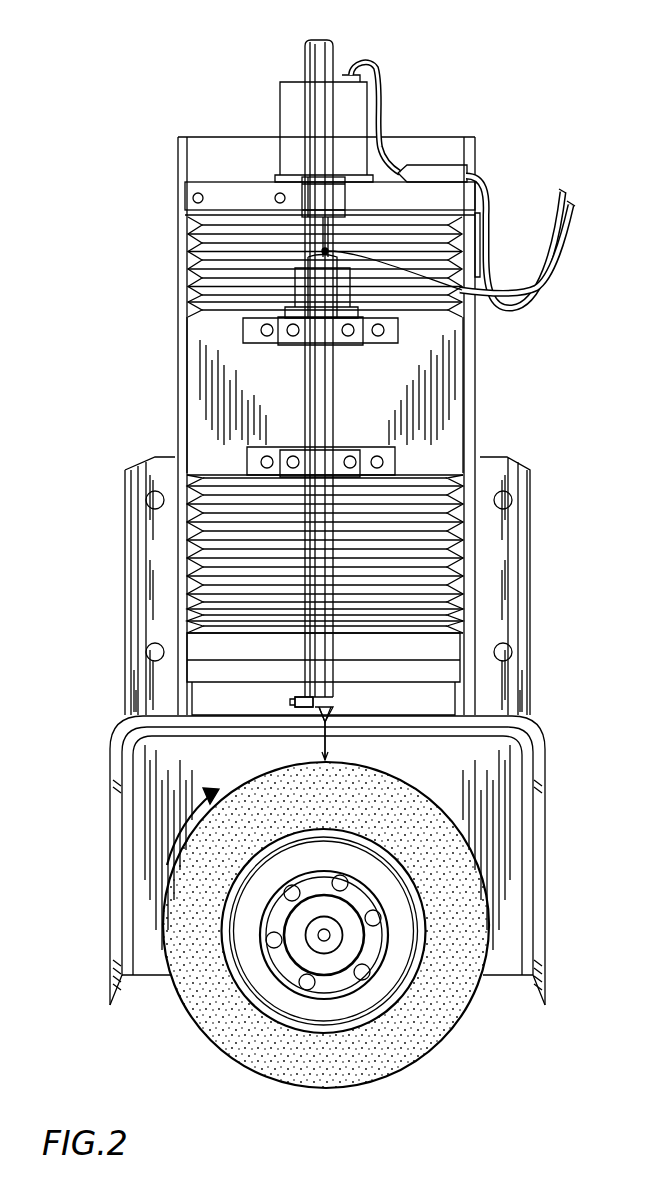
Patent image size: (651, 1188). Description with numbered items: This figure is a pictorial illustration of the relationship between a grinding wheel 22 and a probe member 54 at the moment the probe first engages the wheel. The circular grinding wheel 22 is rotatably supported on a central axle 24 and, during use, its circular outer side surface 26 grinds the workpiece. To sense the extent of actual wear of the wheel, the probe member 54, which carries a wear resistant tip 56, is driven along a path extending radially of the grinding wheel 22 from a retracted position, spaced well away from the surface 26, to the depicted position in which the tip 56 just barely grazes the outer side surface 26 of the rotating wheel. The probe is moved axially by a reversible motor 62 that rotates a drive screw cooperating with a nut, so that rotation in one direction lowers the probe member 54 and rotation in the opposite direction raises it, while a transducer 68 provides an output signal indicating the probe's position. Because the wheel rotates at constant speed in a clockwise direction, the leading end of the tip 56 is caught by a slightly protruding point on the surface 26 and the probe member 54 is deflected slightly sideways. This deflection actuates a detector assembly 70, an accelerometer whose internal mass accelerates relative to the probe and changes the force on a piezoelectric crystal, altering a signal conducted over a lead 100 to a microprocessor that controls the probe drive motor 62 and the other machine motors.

The grinding wheel 22 is at (246, 768).
The central axle 24 is at (320, 937).
The circular outer side surface 26 is at (425, 790).
The probe member 54 is at (328, 740).
The tip 56 is at (324, 757).
The reversible motor 62 is at (297, 105).
The transducer 68 is at (327, 50).
The detector assembly 70 is at (300, 702).
The lead 100 is at (523, 257).